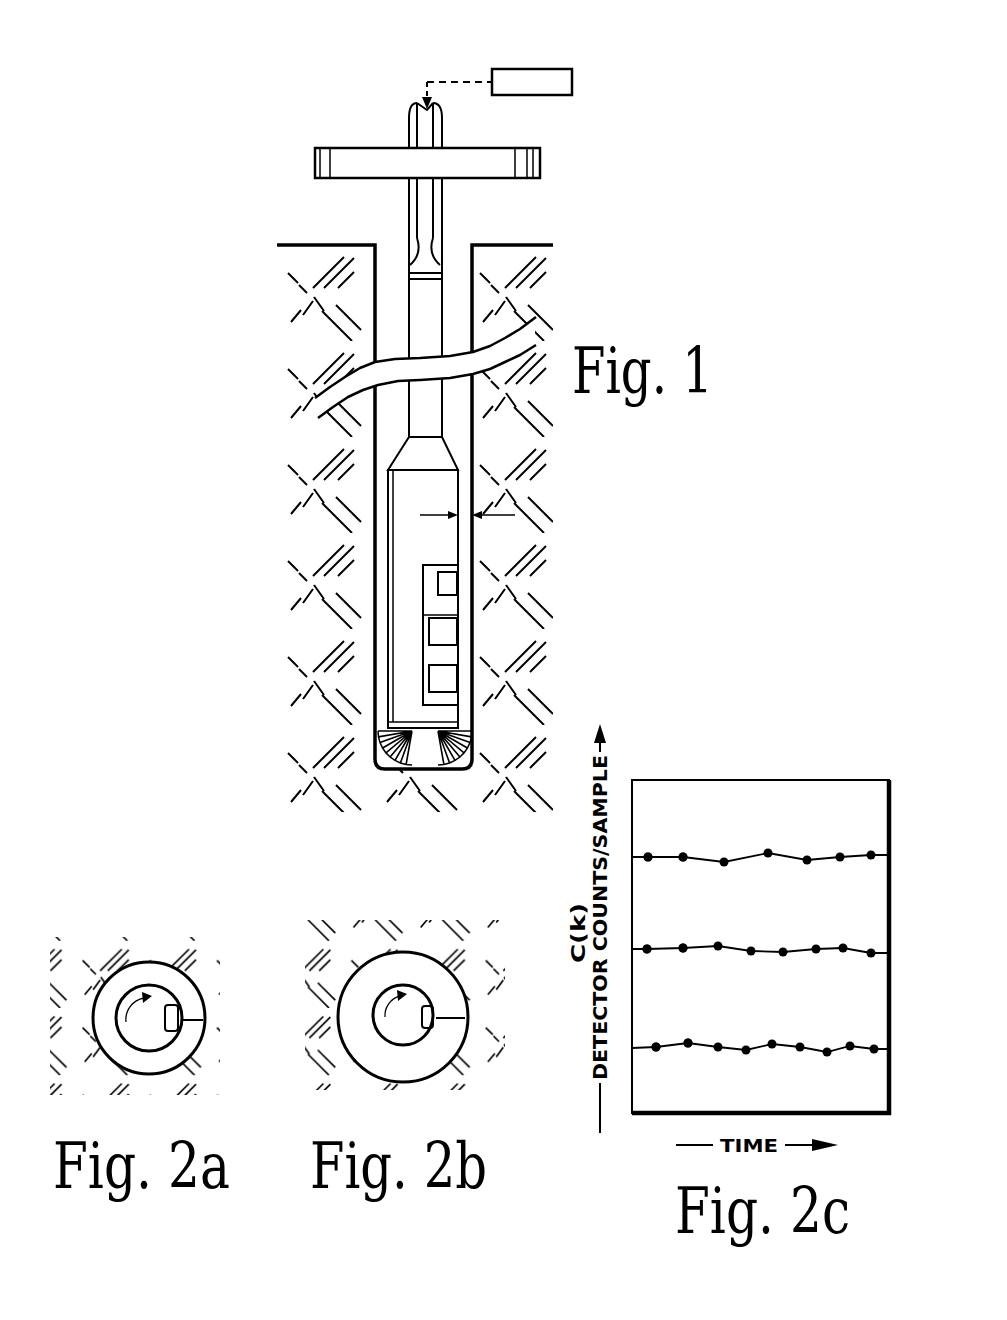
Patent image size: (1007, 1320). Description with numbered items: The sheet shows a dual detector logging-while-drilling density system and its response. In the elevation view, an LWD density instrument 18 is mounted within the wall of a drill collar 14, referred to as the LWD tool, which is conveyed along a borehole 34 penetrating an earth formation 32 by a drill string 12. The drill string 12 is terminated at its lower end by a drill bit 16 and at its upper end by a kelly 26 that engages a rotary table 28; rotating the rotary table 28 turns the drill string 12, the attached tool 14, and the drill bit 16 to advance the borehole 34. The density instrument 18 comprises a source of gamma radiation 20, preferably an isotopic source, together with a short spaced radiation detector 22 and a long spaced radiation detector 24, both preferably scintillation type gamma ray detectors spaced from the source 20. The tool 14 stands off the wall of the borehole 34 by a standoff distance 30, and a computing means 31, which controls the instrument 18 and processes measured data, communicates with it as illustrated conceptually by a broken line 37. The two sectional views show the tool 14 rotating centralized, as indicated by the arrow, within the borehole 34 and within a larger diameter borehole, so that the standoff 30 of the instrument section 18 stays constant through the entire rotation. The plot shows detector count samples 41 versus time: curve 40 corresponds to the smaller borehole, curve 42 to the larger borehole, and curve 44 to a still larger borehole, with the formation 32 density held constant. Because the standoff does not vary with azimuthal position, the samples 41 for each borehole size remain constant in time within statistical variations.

In FIG. 1, the drill string 12 is at (422, 413).
In FIG. 1, the drill collar 14 is at (412, 530).
In FIG. 2A, the drill collar 14 is at (132, 1032).
In FIG. 2B, the drill collar 14 is at (398, 1028).
In FIG. 1, the drill bit 16 is at (390, 732).
In FIG. 1, the LWD density instrument 18 is at (450, 610).
In FIG. 2A, the LWD density instrument 18 is at (175, 1022).
In FIG. 2B, the LWD density instrument 18 is at (432, 1023).
In FIG. 1, the source of gamma radiation 20 is at (458, 578).
In FIG. 1, the short spaced radiation detector 22 is at (458, 633).
In FIG. 1, the long spaced radiation detector 24 is at (458, 676).
In FIG. 1, the kelly 26 is at (437, 225).
In FIG. 1, the rotary table 28 is at (477, 158).
In FIG. 1, the standoff distance 30 is at (500, 512).
In FIG. 2A, the standoff distance 30 is at (192, 1020).
In FIG. 2B, the standoff distance 30 is at (450, 1012).
In FIG. 1, the computing means 31 is at (558, 69).
In FIG. 1, the earth formation 32 is at (349, 343).
In FIG. 2A, the earth formation 32 is at (104, 982).
In FIG. 2B, the earth formation 32 is at (392, 946).
In FIG. 1, the borehole 34 is at (460, 322).
In FIG. 2A, the borehole 34 is at (100, 1012).
In FIG. 2B, the borehole 34 is at (350, 1012).
In FIG. 1, the broken line 37 is at (445, 80).
In FIG. 2C, the curve 40 is at (730, 1048).
In FIG. 2C, the detector count samples 41 is at (683, 855).
In FIG. 2C, the curve 42 is at (733, 947).
In FIG. 2C, the curve 44 is at (748, 855).